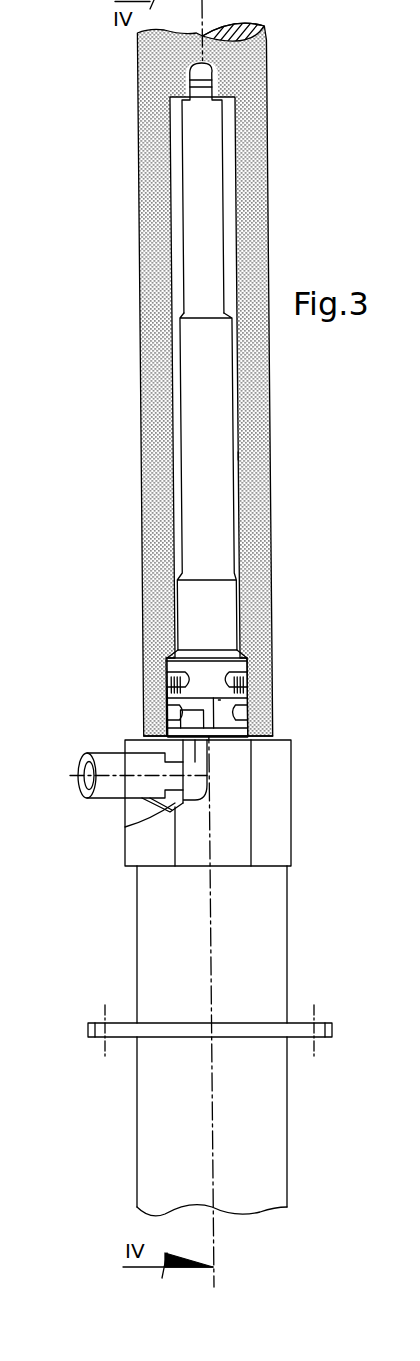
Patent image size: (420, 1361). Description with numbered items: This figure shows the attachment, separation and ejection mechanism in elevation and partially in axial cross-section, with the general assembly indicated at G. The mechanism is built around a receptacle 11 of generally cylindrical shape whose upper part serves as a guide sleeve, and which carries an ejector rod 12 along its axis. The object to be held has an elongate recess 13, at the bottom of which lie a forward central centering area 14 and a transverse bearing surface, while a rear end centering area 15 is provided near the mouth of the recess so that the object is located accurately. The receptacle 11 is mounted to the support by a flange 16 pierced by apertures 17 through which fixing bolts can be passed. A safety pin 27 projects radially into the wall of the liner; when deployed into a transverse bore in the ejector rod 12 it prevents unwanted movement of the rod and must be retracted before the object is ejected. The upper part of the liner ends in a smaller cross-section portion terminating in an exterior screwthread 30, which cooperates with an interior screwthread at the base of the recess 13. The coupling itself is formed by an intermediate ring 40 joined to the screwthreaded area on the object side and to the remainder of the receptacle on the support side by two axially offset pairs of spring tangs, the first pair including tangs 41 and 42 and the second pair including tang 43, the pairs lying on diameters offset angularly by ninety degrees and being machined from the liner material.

The housing G is at (210, 58).
The receptacle 11 is at (288, 910).
The ejector rod 12 is at (240, 452).
The elongate recess 13 is at (238, 490).
The forward central centering area 14 is at (190, 85).
The rear end centering area 15 is at (246, 713).
The flange 16 is at (88, 1040).
The apertures 17 is at (103, 1023).
The safety pin 27 is at (125, 827).
The exterior screwthread 30 is at (166, 665).
The intermediate ring 40 is at (215, 700).
The tang 41 is at (165, 668).
The tang 42 is at (248, 670).
The tang 43 is at (176, 727).